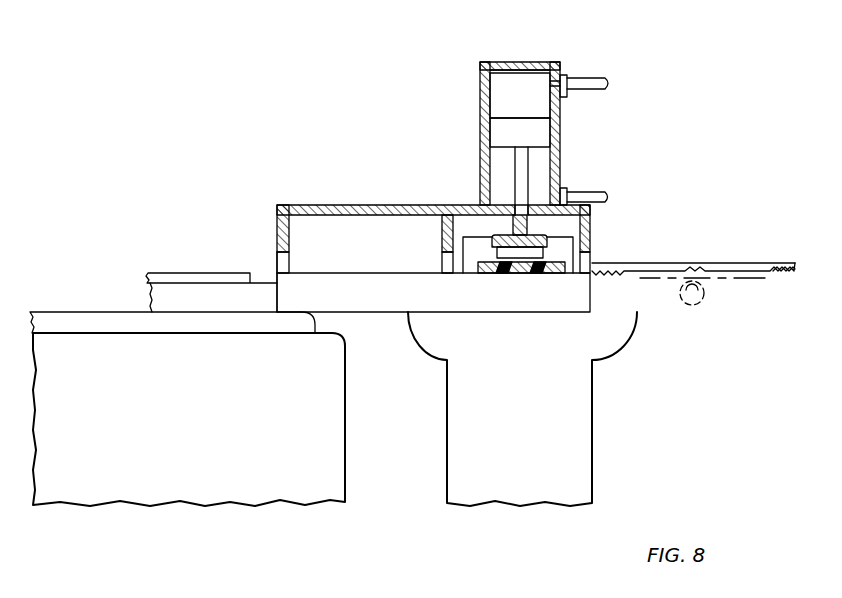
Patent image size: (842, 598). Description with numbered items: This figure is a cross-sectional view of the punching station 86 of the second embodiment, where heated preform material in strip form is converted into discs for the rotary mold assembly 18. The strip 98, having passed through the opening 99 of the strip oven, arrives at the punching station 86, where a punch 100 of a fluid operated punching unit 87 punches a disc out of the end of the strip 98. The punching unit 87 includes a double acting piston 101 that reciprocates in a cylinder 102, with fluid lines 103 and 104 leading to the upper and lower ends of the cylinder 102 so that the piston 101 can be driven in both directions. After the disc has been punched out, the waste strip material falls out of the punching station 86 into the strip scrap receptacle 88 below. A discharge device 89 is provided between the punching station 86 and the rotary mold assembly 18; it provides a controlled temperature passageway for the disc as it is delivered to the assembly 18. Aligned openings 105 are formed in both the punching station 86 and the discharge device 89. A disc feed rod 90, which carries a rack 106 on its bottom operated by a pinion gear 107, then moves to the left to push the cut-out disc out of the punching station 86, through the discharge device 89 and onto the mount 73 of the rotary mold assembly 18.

The rotary mold assembly 18 is at (222, 409).
The mount 73 is at (206, 307).
The punching station 86 is at (598, 208).
The punching unit 87 is at (542, 113).
The strip scrap receptacle 88 is at (592, 452).
The discharge device 89 is at (363, 206).
The disc feed rod 90 is at (755, 262).
The strip 98 is at (552, 266).
The opening 99 is at (487, 266).
The punch 100 is at (548, 234).
The double acting piston 101 is at (527, 122).
The cylinder 102 is at (557, 61).
The fluid line 103 is at (600, 87).
The fluid line 104 is at (592, 192).
The aligned openings 105 is at (280, 262).
The rack 106 is at (779, 278).
The pinion gear 107 is at (692, 306).